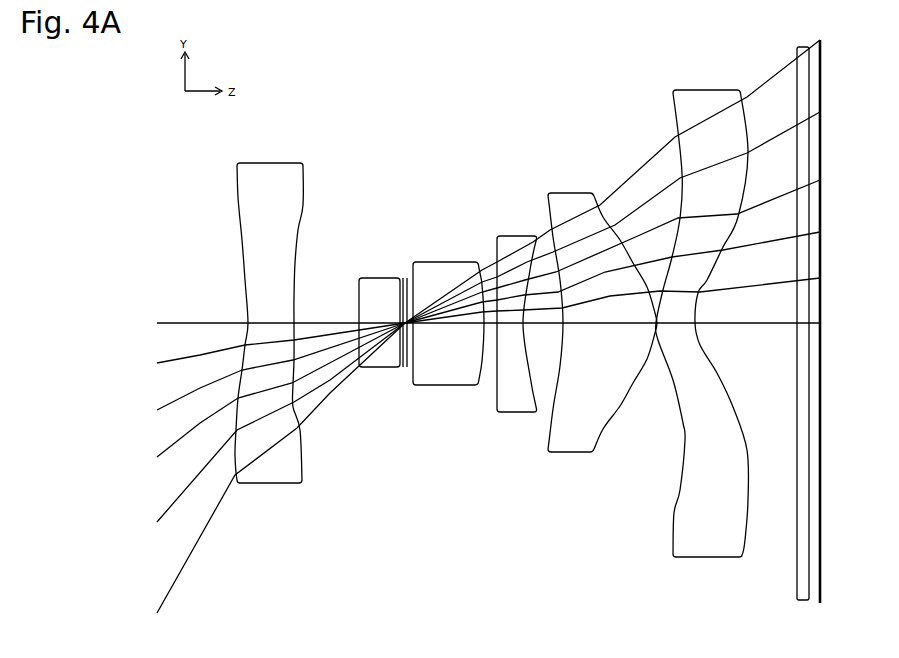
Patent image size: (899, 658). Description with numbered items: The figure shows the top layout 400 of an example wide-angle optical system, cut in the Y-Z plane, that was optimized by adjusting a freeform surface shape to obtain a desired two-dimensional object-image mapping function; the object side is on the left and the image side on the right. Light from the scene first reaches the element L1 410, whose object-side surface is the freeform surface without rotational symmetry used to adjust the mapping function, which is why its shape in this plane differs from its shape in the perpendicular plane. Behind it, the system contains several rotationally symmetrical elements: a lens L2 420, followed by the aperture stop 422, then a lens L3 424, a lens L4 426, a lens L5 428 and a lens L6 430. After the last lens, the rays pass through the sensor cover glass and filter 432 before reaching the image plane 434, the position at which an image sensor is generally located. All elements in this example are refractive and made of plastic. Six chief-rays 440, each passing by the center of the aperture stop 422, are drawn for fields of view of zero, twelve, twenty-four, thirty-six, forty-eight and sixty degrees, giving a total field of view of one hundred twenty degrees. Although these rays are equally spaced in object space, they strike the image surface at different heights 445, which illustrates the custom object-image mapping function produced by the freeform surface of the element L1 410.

The top layout 400 is at (488, 174).
The element L1 410 is at (269, 311).
The lens L2 420 is at (379, 310).
The aperture stop 422 is at (404, 369).
The lens L3 424 is at (448, 311).
The lens L4 426 is at (517, 311).
The lens L5 428 is at (602, 311).
The lens L6 430 is at (702, 311).
The sensor cover glass and filter 432 is at (791, 313).
The image plane 434 is at (839, 315).
The chief-rays 440 is at (266, 468).
The image heights 445 is at (633, 181).